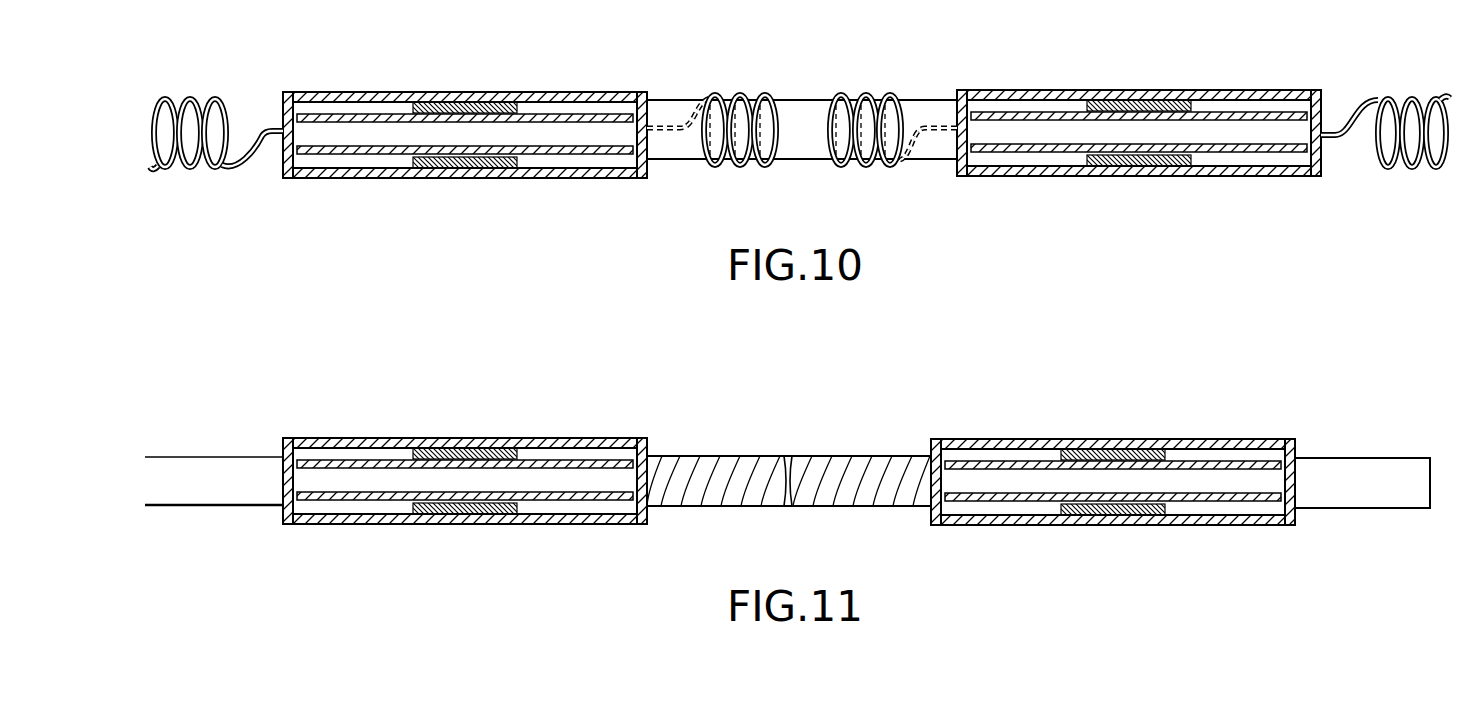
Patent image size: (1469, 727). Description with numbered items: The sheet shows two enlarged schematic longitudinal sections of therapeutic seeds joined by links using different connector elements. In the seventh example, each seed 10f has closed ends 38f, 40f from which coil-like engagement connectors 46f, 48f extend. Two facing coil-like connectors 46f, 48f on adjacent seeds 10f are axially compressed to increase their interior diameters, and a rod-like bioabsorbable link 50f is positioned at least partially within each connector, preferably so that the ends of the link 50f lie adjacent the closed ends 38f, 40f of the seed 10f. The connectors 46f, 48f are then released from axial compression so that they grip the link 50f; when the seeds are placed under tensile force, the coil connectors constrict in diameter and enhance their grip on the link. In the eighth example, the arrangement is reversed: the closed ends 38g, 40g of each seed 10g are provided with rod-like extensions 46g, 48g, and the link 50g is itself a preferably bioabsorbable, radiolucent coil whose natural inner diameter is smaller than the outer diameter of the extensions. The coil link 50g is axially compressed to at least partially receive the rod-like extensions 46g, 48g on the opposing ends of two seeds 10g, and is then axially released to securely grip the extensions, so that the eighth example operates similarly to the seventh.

In FIG. 10, the seed 10f is at (470, 93).
In FIG. 10, the closed end 38f is at (285, 100).
In FIG. 10, the closed end 40f is at (642, 100).
In FIG. 10, the coil-like connector 46f is at (198, 100).
In FIG. 10, the coil-like connector 48f is at (698, 99).
In FIG. 10, the link 50f is at (806, 105).
In FIG. 11, the seed 10g is at (472, 440).
In FIG. 11, the closed end 38g is at (284, 443).
In FIG. 11, the closed end 40g is at (650, 446).
In FIG. 11, the rod-like extension 46g is at (232, 497).
In FIG. 11, the rod-like extension 48g is at (710, 498).
In FIG. 11, the link 50g is at (772, 455).